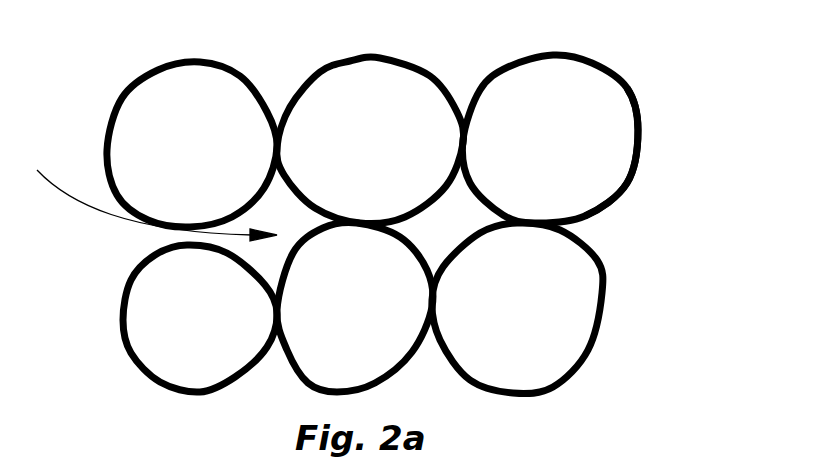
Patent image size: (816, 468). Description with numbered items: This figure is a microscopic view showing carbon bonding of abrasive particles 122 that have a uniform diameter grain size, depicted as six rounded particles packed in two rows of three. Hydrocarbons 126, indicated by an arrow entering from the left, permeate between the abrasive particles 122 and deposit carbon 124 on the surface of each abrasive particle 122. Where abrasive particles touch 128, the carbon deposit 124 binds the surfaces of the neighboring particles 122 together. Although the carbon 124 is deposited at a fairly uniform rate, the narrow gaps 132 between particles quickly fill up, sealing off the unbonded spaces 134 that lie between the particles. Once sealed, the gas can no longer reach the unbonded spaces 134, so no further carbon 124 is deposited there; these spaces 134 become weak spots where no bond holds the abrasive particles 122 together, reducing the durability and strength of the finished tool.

The abrasive particles 122 is at (588, 98).
The carbon deposit 124 is at (628, 183).
The hydrocarbons 126 is at (53, 190).
The touching point of abrasive particles 128 is at (560, 228).
The narrow gaps 132 is at (358, 223).
The unbonded spaces 134 is at (460, 215).